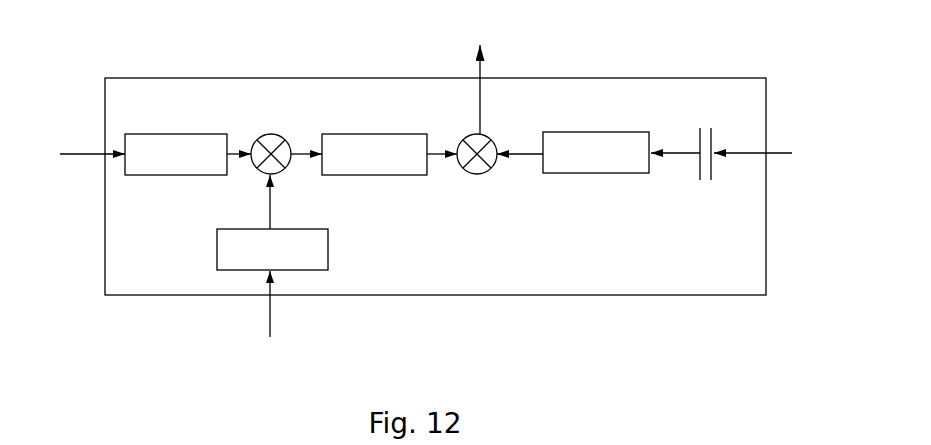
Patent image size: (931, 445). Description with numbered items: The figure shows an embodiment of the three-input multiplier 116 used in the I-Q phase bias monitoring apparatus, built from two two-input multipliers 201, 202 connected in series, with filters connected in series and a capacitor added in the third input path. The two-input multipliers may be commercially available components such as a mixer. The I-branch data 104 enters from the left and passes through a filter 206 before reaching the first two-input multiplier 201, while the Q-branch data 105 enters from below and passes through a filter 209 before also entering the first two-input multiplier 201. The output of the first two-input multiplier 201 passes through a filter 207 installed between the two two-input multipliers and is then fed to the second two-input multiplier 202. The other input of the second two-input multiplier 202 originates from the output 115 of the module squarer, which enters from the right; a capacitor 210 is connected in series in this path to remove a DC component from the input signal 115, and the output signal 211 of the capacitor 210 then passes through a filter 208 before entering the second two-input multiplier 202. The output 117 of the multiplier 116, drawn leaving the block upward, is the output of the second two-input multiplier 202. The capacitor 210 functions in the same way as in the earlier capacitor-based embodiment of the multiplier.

The three-input multiplier 116 is at (745, 77).
The I-branch data 104 is at (76, 160).
The filter 206 is at (170, 176).
The first two-input multiplier 201 is at (270, 133).
The filter 207 is at (395, 176).
The second two-input multiplier 202 is at (476, 178).
The output of the multiplier 117 is at (487, 54).
The filter 208 is at (580, 175).
The output signal of the capacitor 211 is at (674, 154).
The capacitor 210 is at (716, 180).
The output of the module squarer 115 is at (780, 155).
The filter 209 is at (330, 247).
The Q-branch data 105 is at (260, 328).